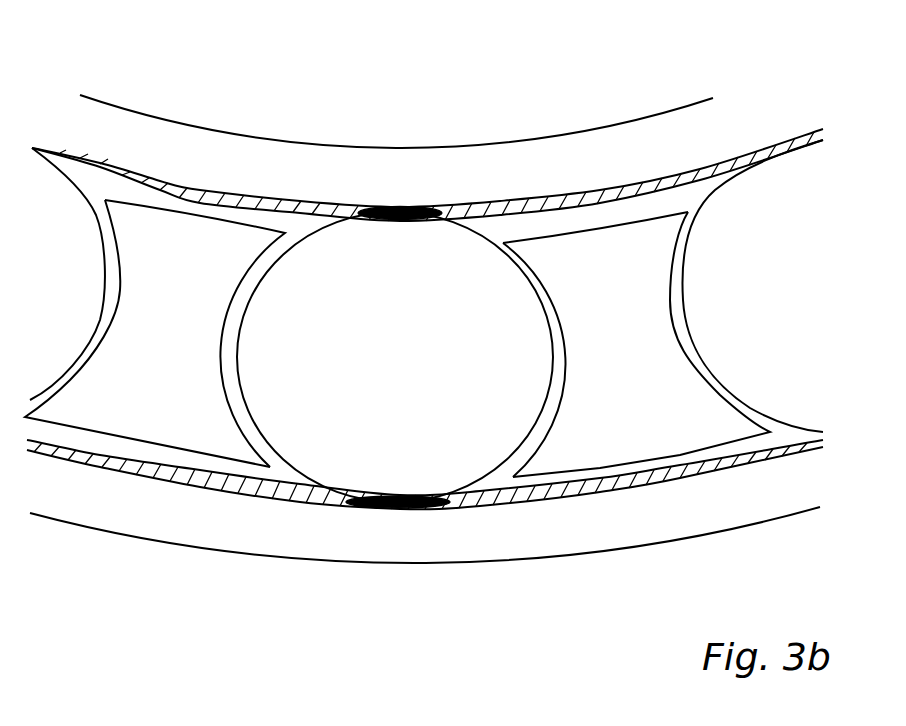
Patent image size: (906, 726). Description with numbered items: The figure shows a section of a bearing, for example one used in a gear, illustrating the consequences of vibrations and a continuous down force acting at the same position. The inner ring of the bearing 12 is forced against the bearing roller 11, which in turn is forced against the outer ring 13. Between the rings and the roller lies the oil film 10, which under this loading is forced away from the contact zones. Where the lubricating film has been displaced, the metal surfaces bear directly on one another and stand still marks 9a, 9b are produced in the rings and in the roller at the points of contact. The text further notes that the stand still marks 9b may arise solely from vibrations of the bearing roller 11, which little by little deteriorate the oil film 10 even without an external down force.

The stand still mark 9a is at (378, 508).
The stand still mark 9b is at (415, 208).
The oil film 10 is at (201, 195).
The bearing roller 11 is at (518, 325).
The inner ring of the bearing 12 is at (547, 157).
The outer ring 13 is at (543, 545).